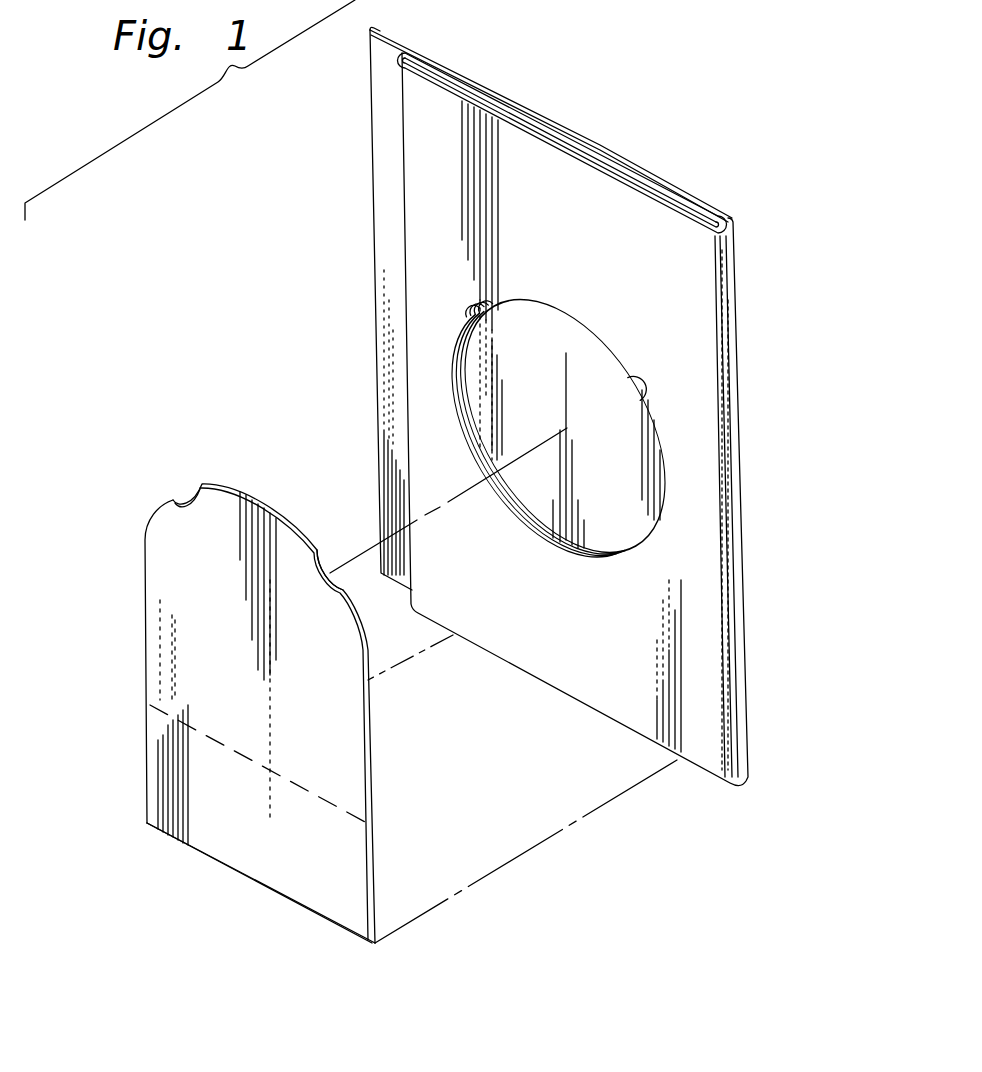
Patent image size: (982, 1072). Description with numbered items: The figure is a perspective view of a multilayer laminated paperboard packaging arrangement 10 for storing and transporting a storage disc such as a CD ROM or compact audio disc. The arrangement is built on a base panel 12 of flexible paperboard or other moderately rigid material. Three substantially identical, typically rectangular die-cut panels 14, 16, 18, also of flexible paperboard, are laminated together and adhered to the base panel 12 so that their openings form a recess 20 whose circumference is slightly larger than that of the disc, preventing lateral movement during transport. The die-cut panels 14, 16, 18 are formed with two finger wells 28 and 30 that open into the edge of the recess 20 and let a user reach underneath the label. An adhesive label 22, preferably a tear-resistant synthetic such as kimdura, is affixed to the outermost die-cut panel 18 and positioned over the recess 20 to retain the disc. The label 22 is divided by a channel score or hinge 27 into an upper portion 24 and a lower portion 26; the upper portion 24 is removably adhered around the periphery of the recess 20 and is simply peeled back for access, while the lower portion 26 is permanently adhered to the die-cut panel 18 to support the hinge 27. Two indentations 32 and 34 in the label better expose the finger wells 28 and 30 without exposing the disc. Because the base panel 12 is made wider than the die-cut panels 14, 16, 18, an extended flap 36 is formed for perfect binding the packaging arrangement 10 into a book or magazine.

The multilayer laminated paperboard packaging arrangement 10 is at (438, 485).
The base panel 12 is at (653, 173).
The die-cut panel 14 is at (607, 157).
The die-cut panel 16 is at (568, 143).
The die-cut panel 18 is at (523, 120).
The recess 20 is at (660, 463).
The adhesive label 22 is at (224, 695).
The upper portion 24 is at (228, 695).
The lower portion 26 is at (205, 823).
The channel score or hinge 27 is at (213, 738).
The finger well 28 is at (493, 303).
The finger well 30 is at (640, 382).
The indentation 32 is at (192, 495).
The indentation 34 is at (325, 563).
The extended flap 36 is at (373, 203).